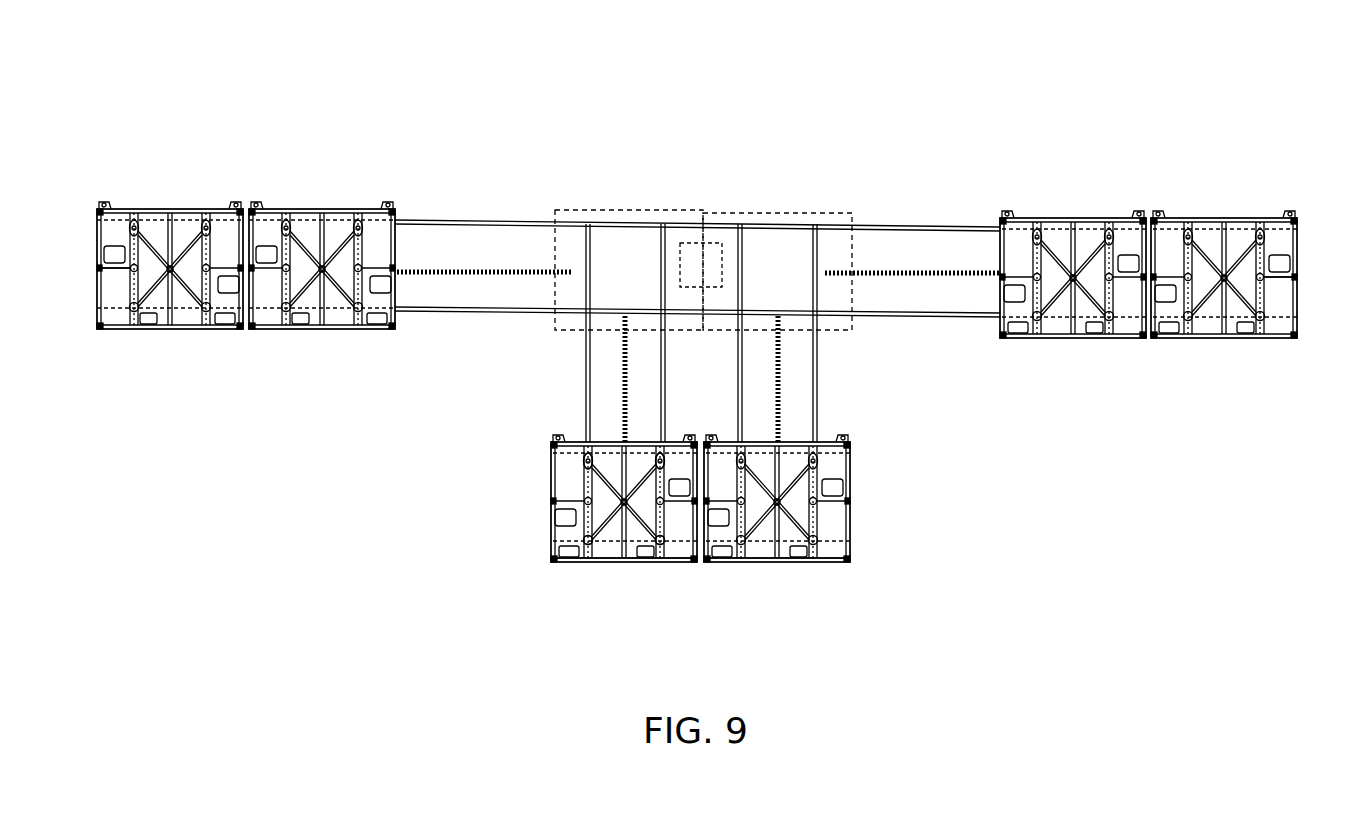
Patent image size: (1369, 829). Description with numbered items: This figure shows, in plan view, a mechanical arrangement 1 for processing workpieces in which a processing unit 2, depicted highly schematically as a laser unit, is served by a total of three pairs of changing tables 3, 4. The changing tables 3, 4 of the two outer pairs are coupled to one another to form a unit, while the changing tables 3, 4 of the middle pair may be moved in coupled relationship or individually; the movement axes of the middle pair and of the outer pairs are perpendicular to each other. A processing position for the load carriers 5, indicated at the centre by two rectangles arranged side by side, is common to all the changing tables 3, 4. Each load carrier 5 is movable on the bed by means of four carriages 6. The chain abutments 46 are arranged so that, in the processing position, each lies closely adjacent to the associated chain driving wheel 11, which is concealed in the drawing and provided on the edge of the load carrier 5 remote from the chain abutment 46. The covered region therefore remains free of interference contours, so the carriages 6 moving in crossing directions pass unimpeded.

The mechanical arrangement 1 is at (425, 78).
The processing unit 2 is at (709, 276).
The changing table 3 is at (328, 200).
The changing table 4 is at (178, 202).
The load carrier 5 is at (124, 303).
The carriage 6 is at (585, 460).
The chain driving wheel 11 is at (103, 270).
The chain abutment 46 is at (568, 268).